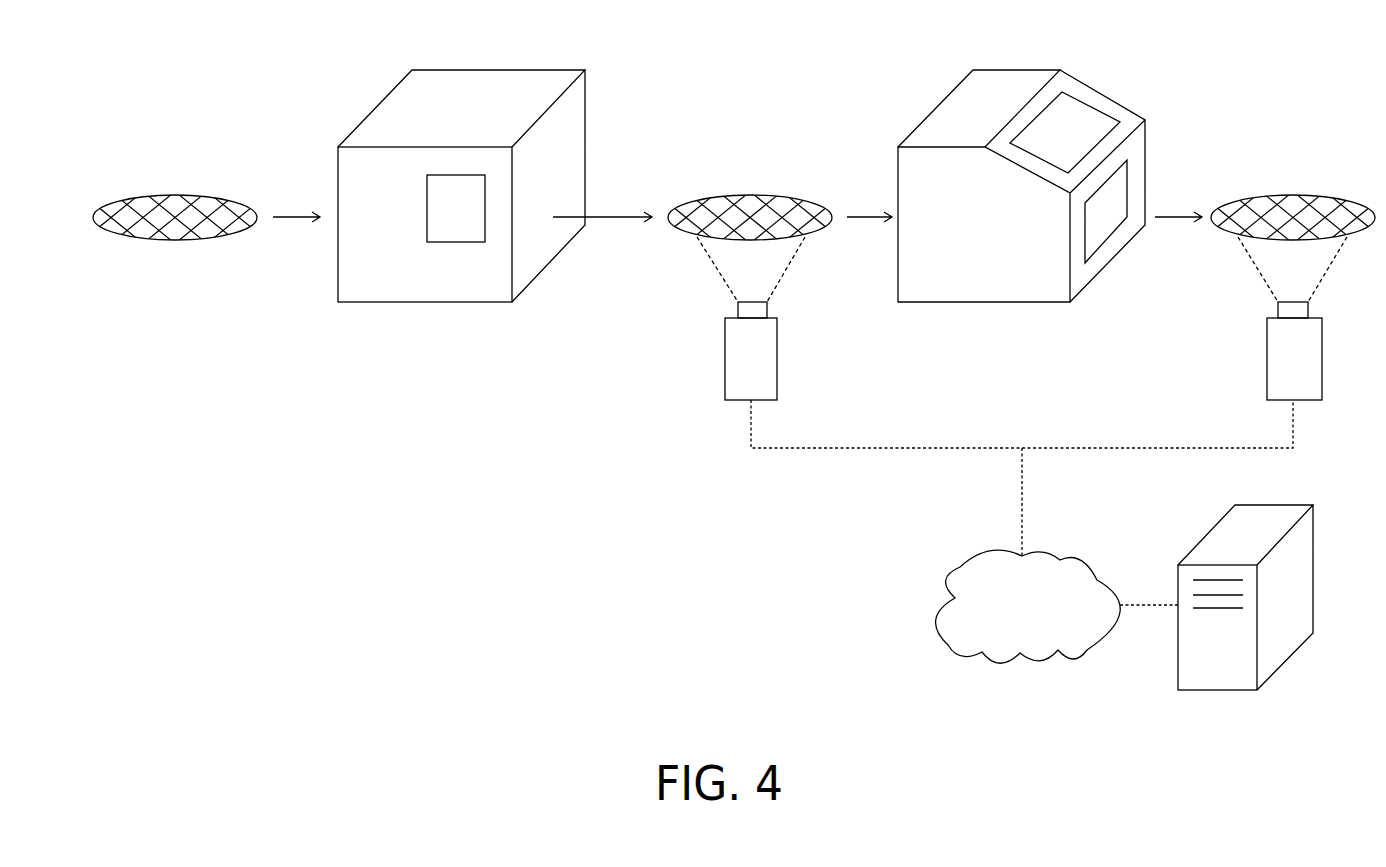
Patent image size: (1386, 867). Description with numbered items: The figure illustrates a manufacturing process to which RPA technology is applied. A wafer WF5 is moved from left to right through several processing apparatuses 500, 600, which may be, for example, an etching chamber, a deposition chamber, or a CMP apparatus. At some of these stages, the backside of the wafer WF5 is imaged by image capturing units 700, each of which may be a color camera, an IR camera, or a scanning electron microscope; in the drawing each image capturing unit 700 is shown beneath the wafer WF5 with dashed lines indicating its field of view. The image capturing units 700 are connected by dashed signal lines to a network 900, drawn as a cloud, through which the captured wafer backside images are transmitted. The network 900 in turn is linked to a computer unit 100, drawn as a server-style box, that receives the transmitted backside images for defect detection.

The wafer WF5 is at (167, 200).
The apparatus 500 is at (463, 88).
The apparatus 600 is at (1015, 88).
The image capturing unit 700 is at (747, 362).
The network 900 is at (1048, 638).
The server / data processing apparatus 100 is at (1272, 518).